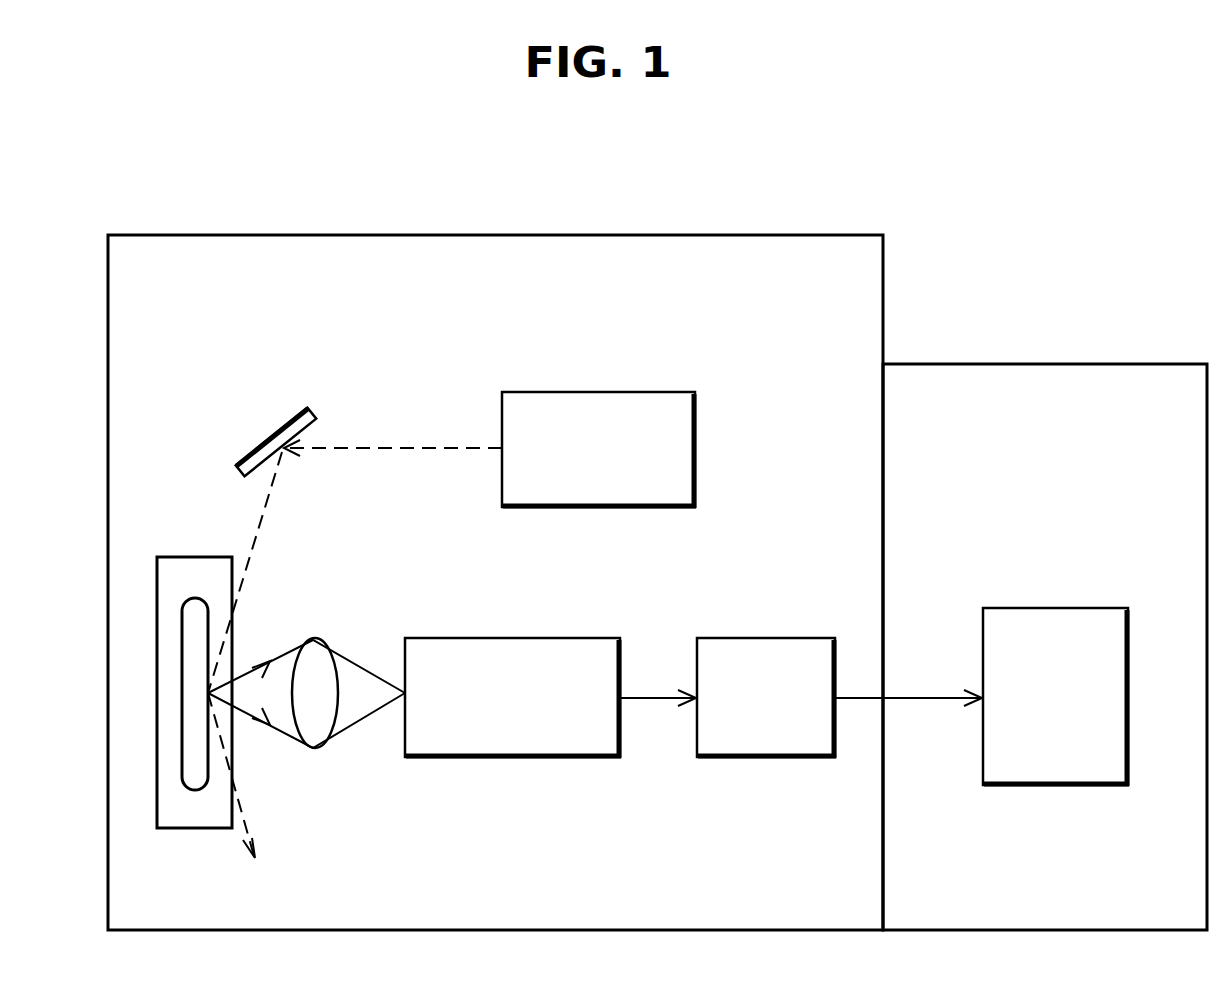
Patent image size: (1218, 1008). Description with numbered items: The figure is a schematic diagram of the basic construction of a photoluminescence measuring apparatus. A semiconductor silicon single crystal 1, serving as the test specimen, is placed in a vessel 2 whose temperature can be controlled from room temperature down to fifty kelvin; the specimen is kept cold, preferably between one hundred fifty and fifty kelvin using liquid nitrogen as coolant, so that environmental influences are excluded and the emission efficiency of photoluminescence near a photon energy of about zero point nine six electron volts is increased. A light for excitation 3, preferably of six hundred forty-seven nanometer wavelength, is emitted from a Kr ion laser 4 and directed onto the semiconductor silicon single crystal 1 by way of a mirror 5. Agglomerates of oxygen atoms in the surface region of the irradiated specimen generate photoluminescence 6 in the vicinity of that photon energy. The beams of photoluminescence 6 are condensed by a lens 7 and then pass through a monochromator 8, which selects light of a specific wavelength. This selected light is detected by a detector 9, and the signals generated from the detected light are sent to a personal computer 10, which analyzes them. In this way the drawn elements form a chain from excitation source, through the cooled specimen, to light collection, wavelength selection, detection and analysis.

The semiconductor silicon single crystal 1 is at (193, 600).
The vessel 2 is at (178, 830).
The light for excitation 3 is at (402, 448).
The Kr ion laser 4 is at (603, 392).
The mirror 5 is at (262, 438).
The photoluminescence 6 is at (358, 661).
The lens 7 is at (320, 735).
The monochromator 8 is at (490, 760).
The detector 9 is at (768, 760).
The personal computer 10 is at (1090, 787).